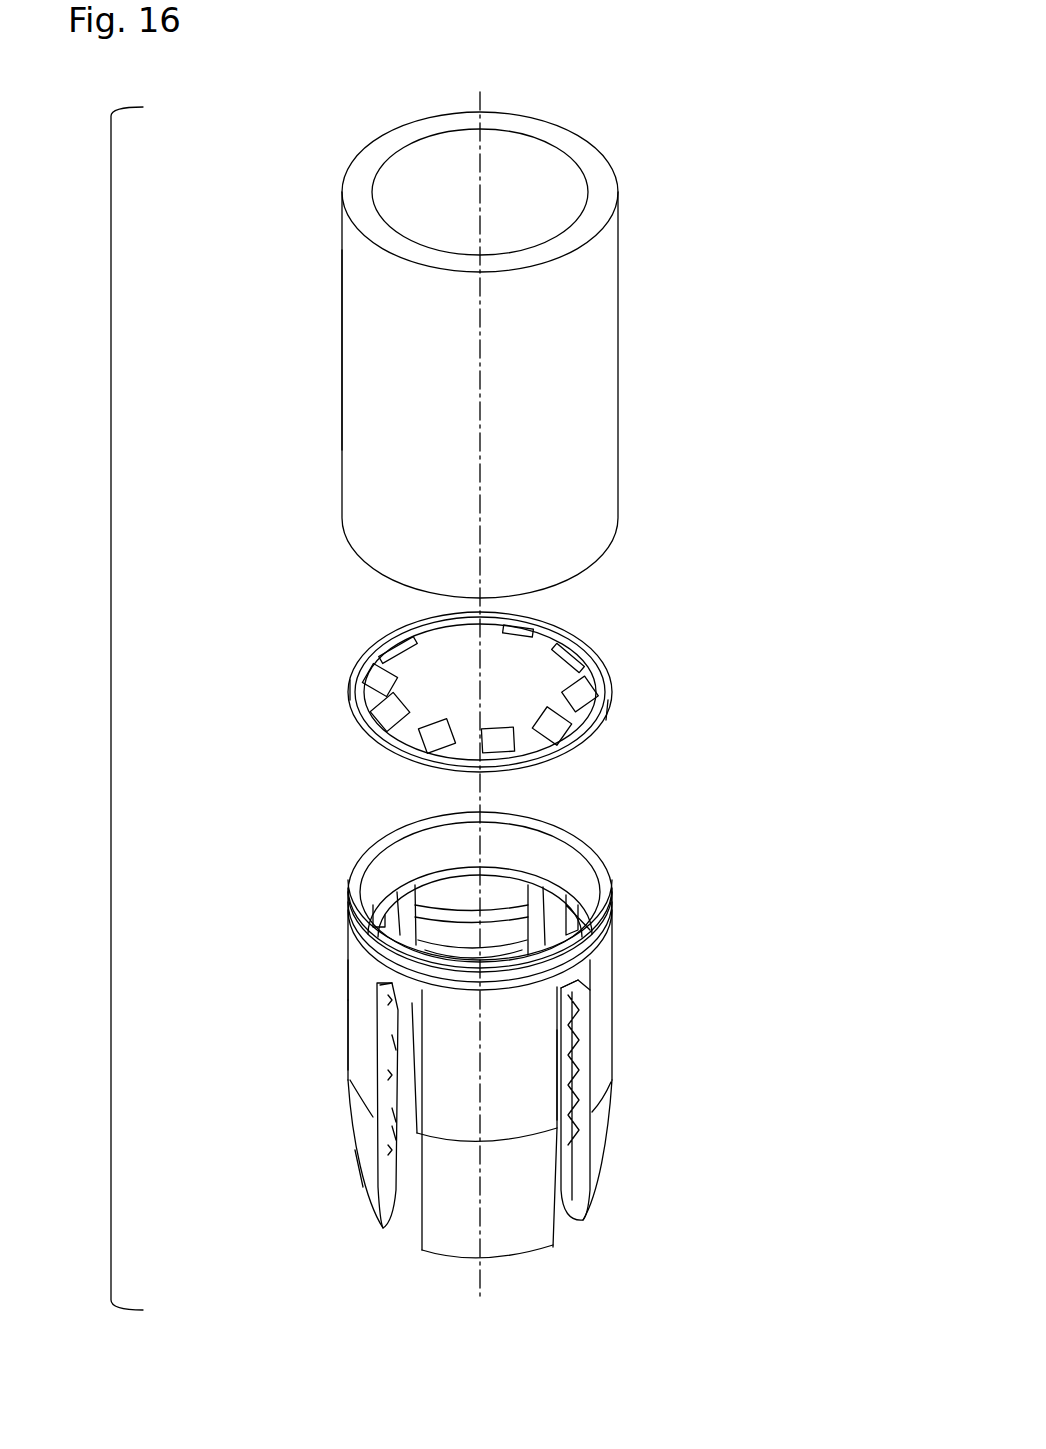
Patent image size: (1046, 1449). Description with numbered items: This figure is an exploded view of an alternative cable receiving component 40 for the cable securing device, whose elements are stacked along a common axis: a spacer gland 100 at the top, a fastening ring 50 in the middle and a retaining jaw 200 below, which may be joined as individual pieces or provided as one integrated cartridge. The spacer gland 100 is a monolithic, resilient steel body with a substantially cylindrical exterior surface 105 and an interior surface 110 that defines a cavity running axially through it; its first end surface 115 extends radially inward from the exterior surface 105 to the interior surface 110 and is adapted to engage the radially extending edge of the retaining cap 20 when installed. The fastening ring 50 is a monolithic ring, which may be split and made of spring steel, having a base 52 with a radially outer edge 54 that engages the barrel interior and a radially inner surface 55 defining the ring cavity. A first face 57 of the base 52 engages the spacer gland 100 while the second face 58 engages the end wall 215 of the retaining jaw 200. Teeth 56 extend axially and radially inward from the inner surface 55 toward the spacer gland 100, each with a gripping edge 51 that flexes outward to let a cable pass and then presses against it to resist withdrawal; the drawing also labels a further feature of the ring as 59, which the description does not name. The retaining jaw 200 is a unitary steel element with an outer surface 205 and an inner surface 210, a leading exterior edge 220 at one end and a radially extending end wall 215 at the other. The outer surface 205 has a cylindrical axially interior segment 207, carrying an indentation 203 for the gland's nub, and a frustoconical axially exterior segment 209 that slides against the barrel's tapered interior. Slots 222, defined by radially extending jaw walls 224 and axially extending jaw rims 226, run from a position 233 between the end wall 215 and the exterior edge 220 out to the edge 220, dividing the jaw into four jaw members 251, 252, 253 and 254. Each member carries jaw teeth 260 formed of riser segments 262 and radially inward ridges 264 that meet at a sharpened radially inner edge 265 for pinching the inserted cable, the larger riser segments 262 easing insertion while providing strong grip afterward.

The retaining cap 20 is at (810, 190).
The cable receiving component 40 is at (111, 716).
The spacer gland 100 is at (508, 341).
The exterior surface 105 is at (375, 358).
The interior surface 110 is at (556, 152).
The first end surface 115 is at (420, 122).
The fastening ring 50 is at (511, 709).
The gripping edge 51 is at (496, 727).
The fastening ring base 52 is at (586, 737).
The radially outer edge 54 is at (618, 700).
The radially inner surface 55 is at (378, 661).
The teeth 56 is at (398, 710).
The first face 57 is at (352, 683).
The second face 58 is at (447, 769).
The slot 59 is at (412, 652).
The retaining jaw 200 is at (481, 1086).
The indentation 203 is at (350, 928).
The outer surface 205 is at (660, 1020).
The axially interior segment 207 is at (346, 994).
The axially exterior segment 209 is at (368, 1178).
The inner surface 210 is at (405, 851).
The end wall 215 is at (352, 870).
The exterior edge 220 is at (370, 1218).
The slots 222 is at (406, 1245).
The jaw walls 224 is at (385, 1055).
The jaw rims 226 is at (392, 993).
The position 233 is at (590, 972).
The jaw member 251 is at (300, 1205).
The jaw member 252 is at (526, 1280).
The jaw member 253 is at (635, 1128).
The jaw member 254 is at (500, 893).
The jaw teeth 260 is at (440, 905).
The riser segments 262 is at (392, 1133).
The ridges 264 is at (392, 1115).
The radially inner edge 265 is at (396, 1042).